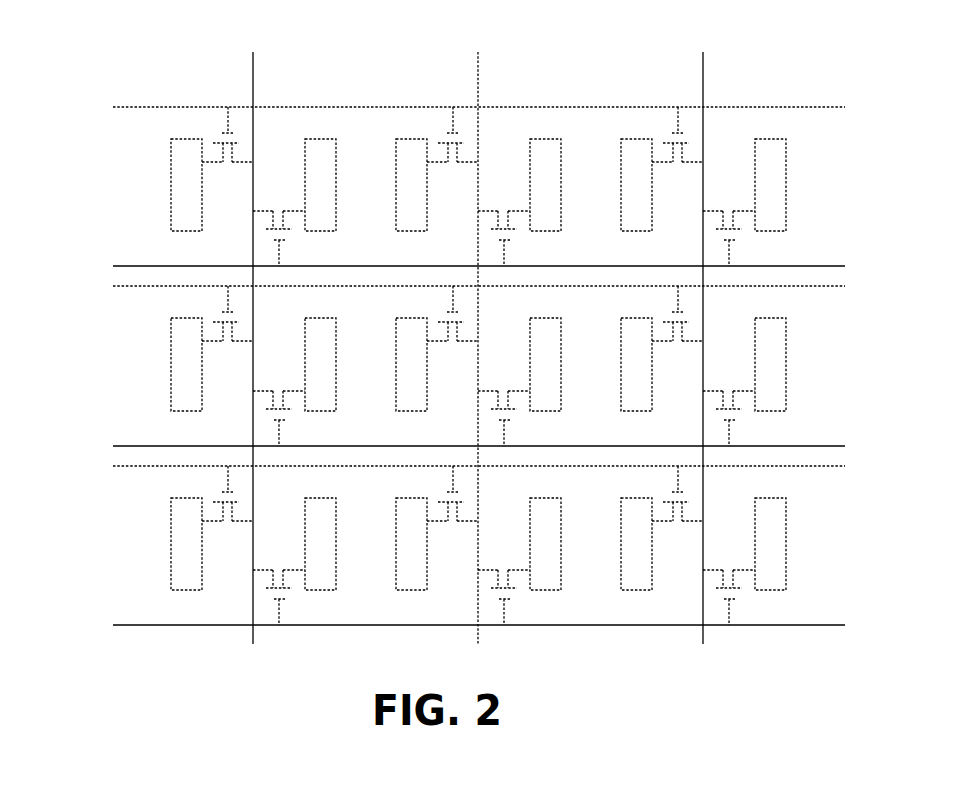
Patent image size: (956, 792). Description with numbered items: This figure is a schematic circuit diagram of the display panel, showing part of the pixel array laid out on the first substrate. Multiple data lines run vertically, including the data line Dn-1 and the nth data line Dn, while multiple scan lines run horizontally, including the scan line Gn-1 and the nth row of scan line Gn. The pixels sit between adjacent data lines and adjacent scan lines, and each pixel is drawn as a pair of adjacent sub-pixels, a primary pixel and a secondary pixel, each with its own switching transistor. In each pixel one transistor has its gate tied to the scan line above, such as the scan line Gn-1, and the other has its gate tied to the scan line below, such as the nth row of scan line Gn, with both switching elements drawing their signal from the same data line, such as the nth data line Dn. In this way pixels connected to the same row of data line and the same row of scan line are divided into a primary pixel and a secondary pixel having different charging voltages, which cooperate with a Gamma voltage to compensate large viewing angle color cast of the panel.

The scan line Gn-1 is at (451, 107).
The nth row of scan line Gn is at (459, 264).
The data line Dn-1 is at (253, 331).
The nth row of data line Dn is at (478, 331).